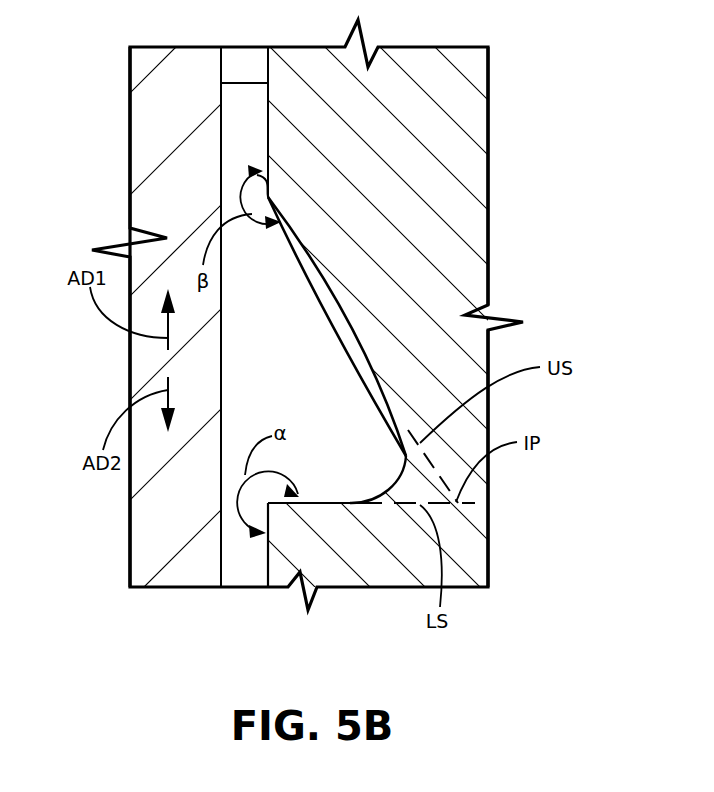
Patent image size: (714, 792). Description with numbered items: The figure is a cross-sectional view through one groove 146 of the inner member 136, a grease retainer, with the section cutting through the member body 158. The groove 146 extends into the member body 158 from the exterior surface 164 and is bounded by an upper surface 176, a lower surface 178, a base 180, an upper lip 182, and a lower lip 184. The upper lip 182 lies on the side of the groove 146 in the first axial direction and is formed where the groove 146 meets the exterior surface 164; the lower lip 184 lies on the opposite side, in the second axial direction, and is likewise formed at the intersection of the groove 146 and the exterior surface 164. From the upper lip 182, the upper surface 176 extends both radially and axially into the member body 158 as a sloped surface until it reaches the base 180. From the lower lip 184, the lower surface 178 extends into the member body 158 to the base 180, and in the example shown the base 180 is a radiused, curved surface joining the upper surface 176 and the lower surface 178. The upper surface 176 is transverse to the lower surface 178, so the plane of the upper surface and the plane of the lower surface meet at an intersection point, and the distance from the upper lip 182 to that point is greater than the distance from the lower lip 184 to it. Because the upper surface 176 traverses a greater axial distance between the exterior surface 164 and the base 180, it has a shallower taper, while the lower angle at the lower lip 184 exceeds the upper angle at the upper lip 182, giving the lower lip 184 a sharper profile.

The inner member 136 is at (230, 131).
The groove 146 is at (290, 371).
The exterior surface 164 is at (267, 96).
The member body 158 is at (420, 105).
The upper surface 176 is at (342, 314).
The upper lip 182 is at (263, 170).
The base 180 is at (387, 480).
The lower surface 178 is at (322, 504).
The lower lip 184 is at (288, 514).